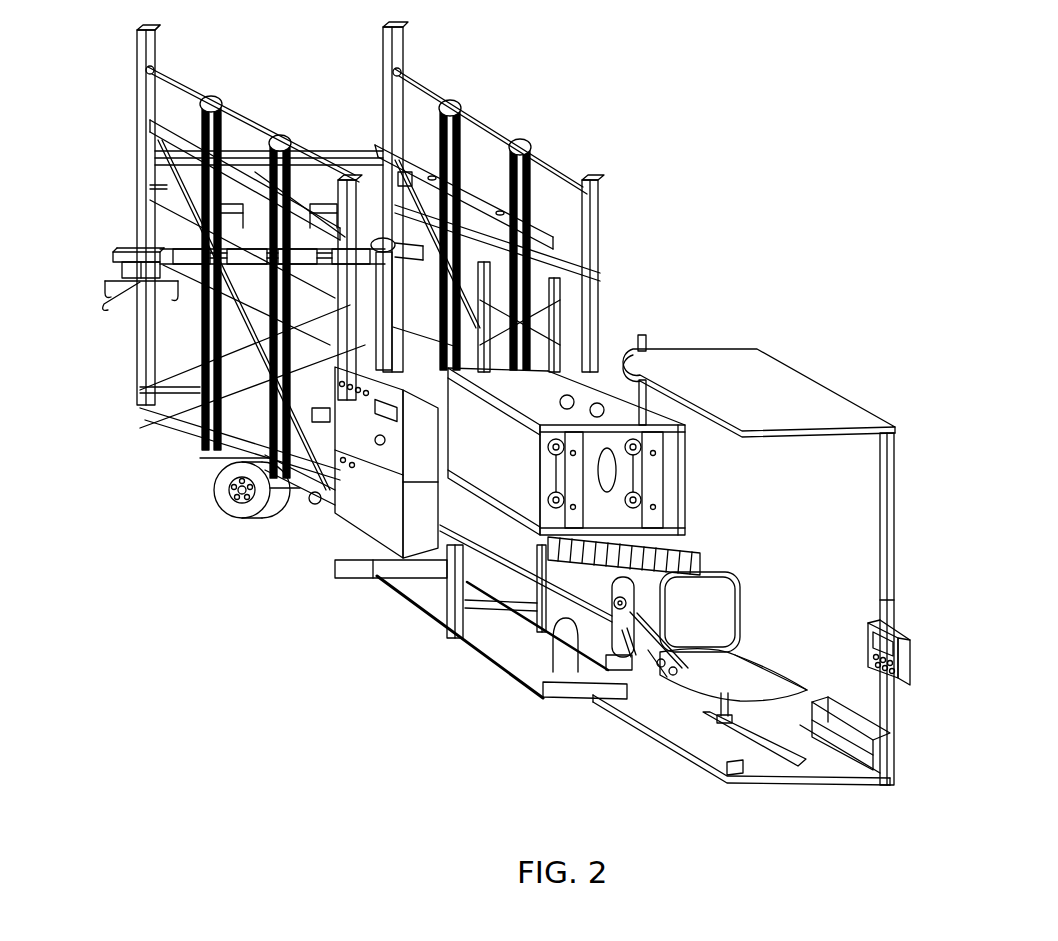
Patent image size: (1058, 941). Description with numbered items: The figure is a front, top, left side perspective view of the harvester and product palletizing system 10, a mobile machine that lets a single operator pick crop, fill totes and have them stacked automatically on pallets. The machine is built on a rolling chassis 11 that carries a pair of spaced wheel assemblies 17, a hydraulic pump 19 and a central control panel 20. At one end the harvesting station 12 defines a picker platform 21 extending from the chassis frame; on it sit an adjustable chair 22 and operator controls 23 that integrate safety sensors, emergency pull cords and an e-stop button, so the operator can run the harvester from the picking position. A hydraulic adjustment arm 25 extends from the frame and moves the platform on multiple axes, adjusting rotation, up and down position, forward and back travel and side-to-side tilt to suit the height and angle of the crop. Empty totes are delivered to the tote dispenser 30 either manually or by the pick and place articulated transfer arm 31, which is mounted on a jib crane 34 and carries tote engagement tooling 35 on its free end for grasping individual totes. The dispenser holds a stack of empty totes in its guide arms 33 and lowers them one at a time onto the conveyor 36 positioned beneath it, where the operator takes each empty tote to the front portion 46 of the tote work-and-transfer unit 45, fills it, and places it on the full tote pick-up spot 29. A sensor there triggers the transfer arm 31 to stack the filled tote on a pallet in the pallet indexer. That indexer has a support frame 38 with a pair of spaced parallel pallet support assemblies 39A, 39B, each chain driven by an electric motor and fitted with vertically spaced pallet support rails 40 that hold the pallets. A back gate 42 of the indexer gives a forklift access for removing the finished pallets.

The harvester and product palletizing system 10 is at (562, 83).
The rolling chassis 11 is at (219, 481).
The harvesting station 12 is at (672, 745).
The wheel assemblies 17 is at (206, 503).
The hydraulic pump 19 is at (348, 463).
The central control panel 20 is at (338, 581).
The picker platform 21 is at (752, 751).
The adjustable chair 22 is at (779, 567).
The operator controls 23 is at (917, 626).
The hydraulic adjustment arm 25 is at (645, 647).
The full tote pick-up spot 29 is at (467, 597).
The tote dispenser 30 is at (568, 414).
The pick and place articulated transfer arm 31 is at (217, 282).
The guide arms 33 is at (622, 300).
The jib crane 34 is at (203, 444).
The tote engagement tooling 35 is at (110, 324).
The conveyor 36 is at (742, 527).
The support frame 38 is at (100, 215).
The first pallet support assembly 39A is at (252, 266).
The second pallet support assembly 39B is at (490, 213).
The pallet support rails 40 is at (362, 168).
The back gate 42 is at (321, 248).
The tote work-and-transfer unit 45 is at (409, 606).
The front portion 46 is at (502, 637).